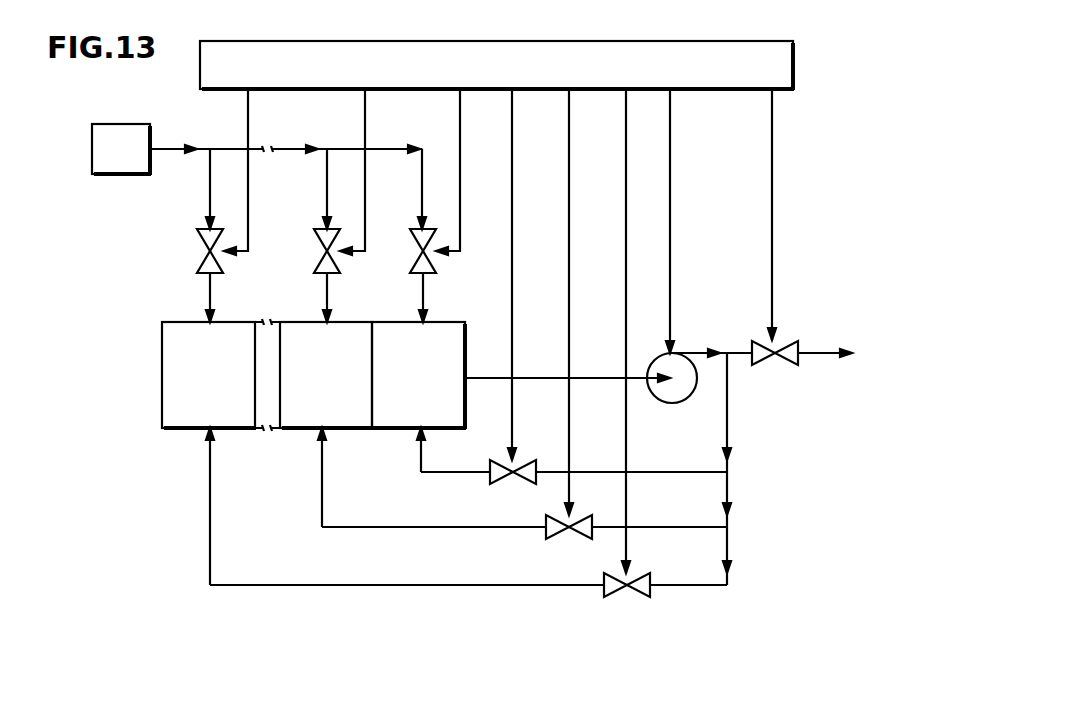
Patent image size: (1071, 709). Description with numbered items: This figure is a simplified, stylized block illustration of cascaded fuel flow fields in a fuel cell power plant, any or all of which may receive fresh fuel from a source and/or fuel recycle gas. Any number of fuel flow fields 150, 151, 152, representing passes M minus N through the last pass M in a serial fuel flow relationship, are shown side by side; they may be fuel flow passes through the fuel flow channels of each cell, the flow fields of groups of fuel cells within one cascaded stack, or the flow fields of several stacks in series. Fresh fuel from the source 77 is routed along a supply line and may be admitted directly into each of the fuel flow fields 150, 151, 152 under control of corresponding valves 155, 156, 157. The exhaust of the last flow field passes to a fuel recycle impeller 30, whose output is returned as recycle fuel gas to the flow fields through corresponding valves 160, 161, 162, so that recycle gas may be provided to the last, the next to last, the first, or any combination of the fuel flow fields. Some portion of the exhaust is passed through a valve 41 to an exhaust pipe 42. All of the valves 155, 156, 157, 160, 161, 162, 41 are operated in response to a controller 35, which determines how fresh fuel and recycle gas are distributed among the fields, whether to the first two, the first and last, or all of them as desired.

The controller 35 is at (625, 41).
The source 77 is at (121, 124).
The valve 155 is at (203, 247).
The valve 156 is at (320, 247).
The valve 157 is at (416, 247).
The fuel flow field 150 is at (190, 430).
The fuel flow field 151 is at (305, 430).
The fuel flow field 152 is at (402, 430).
The fuel recycle impeller 30 is at (677, 394).
The valve 41 is at (778, 366).
The exhaust pipe 42 is at (812, 351).
The valve 160 is at (612, 599).
The valve 161 is at (554, 541).
The valve 162 is at (497, 485).